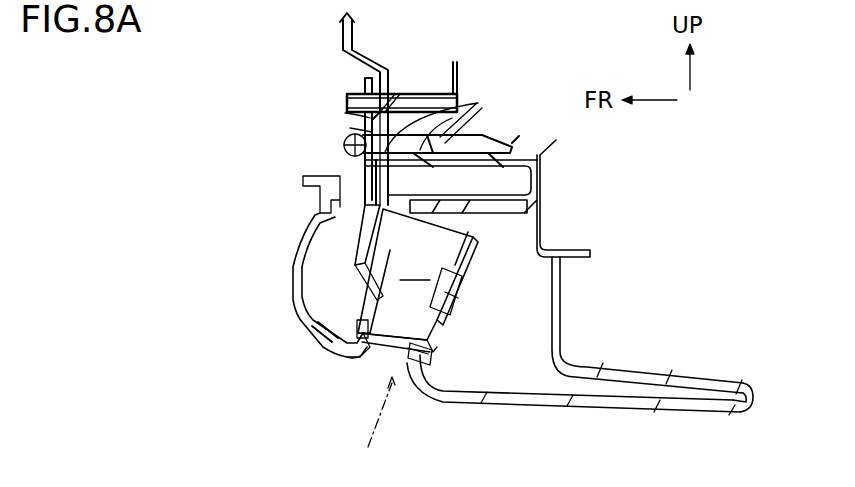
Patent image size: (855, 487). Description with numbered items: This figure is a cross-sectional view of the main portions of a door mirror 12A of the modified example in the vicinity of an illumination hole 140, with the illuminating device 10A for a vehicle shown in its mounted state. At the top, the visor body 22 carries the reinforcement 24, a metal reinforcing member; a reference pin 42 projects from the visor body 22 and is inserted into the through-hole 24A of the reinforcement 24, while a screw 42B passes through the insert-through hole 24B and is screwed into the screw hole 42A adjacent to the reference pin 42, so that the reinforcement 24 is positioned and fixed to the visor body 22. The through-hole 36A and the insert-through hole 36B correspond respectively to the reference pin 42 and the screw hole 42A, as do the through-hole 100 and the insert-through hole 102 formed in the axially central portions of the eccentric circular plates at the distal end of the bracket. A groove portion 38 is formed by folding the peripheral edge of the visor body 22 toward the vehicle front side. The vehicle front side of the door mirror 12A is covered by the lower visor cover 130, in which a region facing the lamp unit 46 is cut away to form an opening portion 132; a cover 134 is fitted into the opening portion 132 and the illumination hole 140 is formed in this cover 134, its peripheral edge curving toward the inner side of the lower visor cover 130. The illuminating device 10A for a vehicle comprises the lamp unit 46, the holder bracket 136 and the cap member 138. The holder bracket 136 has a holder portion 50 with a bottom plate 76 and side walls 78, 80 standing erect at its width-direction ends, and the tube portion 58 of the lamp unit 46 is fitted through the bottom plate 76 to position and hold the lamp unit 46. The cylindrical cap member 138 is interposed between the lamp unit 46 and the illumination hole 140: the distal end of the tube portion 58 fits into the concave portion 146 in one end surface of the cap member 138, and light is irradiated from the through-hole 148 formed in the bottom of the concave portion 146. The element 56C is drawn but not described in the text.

The door mirror 12A is at (273, 71).
The reinforcement 24 is at (342, 32).
The visor body 22 is at (445, 94).
The through-hole 36A is at (366, 97).
The reference pin 42 is at (347, 100).
The through-hole 24A is at (396, 110).
The insert-through hole 24B is at (478, 103).
The screw 42B is at (480, 128).
The screw hole 42A is at (455, 162).
The holder portion 50 is at (388, 190).
The insert-through hole 36B is at (344, 145).
The through-hole 100 is at (345, 113).
The insert-through hole 102 is at (350, 128).
The flange 56C is at (303, 186).
The lower visor cover 130 is at (293, 246).
The side wall 80 is at (360, 250).
The tube portion 58 is at (368, 303).
The through-hole 148 is at (403, 330).
The side wall 78 is at (468, 280).
The bottom plate 76 is at (455, 305).
The concave portion 146 is at (440, 346).
The cap member 138 is at (440, 362).
The opening portion 132 is at (320, 338).
The cover 134 is at (352, 357).
The illumination hole 140 is at (392, 385).
The lamp unit 46 is at (612, 198).
The illuminating device for a vehicle 10A is at (648, 222).
The holder bracket 136 is at (556, 272).
The groove portion 38 is at (722, 410).